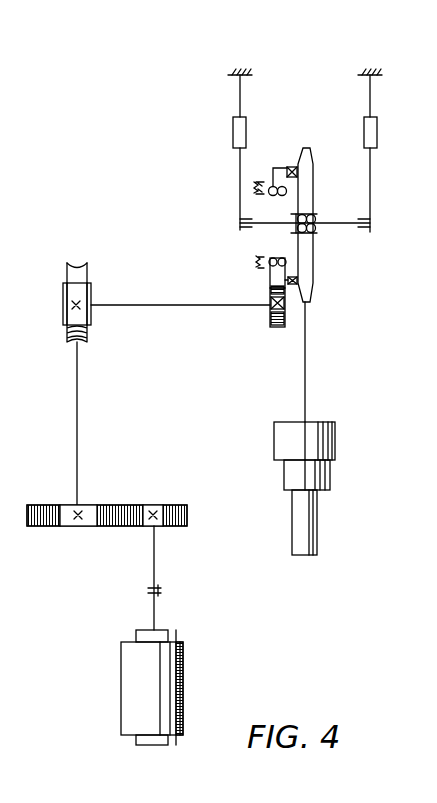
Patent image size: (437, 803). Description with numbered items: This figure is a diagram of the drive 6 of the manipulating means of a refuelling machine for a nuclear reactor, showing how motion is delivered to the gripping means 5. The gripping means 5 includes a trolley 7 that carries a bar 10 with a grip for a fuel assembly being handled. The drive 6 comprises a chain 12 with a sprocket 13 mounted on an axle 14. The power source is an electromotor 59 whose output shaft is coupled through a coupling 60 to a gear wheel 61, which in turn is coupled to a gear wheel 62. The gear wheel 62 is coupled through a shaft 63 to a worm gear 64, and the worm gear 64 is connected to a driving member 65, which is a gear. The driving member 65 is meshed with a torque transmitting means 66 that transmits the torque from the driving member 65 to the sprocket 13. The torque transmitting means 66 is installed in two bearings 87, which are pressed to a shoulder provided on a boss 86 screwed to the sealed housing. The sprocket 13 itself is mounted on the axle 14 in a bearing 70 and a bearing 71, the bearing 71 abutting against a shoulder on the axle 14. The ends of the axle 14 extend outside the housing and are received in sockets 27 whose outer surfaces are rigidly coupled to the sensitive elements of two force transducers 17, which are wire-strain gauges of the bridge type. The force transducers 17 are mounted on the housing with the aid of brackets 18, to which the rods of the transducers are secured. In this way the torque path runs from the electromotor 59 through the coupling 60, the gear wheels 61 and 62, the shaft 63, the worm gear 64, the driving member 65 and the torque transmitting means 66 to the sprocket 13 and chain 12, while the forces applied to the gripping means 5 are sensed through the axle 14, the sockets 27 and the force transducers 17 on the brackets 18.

The gripping means 5 is at (340, 481).
The drive 6 is at (44, 369).
The trolley 7 is at (328, 438).
The bar 10 is at (316, 526).
The chain 12 is at (307, 367).
The sprocket 13 is at (310, 187).
The axle 14 is at (339, 222).
The force transducers 17 is at (233, 130).
The brackets 18 is at (240, 64).
The sockets 27 is at (241, 230).
The electromotor 59 is at (180, 660).
The coupling 60 is at (157, 589).
The gear wheel 61 is at (156, 505).
The gear wheel 62 is at (88, 505).
The shaft 63 is at (79, 397).
The worm gear 64 is at (91, 312).
The driving member 65 is at (268, 322).
The torque transmitting means 66 is at (268, 282).
The bearing 70 is at (317, 231).
The bearing 71 is at (296, 227).
The boss 86 is at (256, 187).
The bearings 87 is at (268, 194).